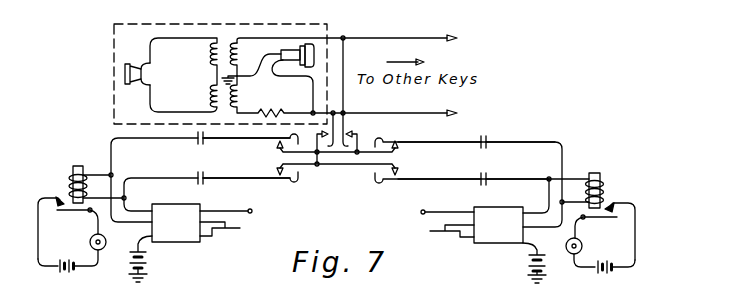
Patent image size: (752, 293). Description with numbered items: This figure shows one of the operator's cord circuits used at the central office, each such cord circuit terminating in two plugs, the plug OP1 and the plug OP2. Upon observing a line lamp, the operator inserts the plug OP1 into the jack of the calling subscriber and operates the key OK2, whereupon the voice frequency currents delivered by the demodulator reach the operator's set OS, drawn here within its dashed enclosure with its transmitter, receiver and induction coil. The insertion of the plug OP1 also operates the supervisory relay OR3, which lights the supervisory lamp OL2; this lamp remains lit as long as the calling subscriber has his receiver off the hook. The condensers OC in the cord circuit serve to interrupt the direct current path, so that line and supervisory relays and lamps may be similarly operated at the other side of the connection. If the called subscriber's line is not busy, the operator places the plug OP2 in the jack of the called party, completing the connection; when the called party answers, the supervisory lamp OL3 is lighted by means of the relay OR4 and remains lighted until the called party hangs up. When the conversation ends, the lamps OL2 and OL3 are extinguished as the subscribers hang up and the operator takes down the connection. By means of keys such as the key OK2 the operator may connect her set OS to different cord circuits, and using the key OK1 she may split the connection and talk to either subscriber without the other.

The operator's set OS is at (231, 32).
The condensers OC is at (206, 141).
The key OK1 is at (353, 192).
The key OK2 is at (338, 135).
The supervisory relay OR3 is at (78, 166).
The relay OR4 is at (596, 165).
The supervisory lamp OL2 is at (72, 241).
The supervisory lamp OL3 is at (582, 246).
The plug OP1 is at (183, 232).
The plug OP2 is at (490, 238).